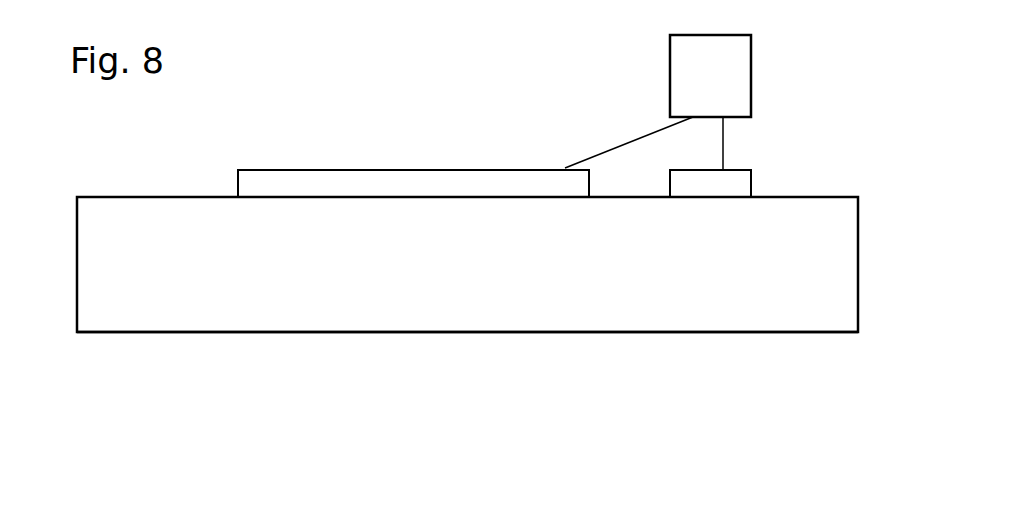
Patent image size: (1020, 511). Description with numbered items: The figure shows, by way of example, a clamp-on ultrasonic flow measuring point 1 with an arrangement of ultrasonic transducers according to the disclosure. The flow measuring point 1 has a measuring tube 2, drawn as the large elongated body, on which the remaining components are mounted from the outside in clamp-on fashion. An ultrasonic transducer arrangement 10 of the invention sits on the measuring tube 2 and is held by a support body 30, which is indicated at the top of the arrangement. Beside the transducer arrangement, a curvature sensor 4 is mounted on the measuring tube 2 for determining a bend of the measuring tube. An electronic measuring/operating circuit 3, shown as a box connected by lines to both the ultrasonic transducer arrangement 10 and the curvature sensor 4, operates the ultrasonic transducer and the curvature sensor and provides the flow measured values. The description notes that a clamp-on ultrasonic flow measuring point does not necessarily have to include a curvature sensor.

The flow measuring point 1 is at (427, 358).
The measuring tube 2 is at (155, 332).
The ultrasonic transducer arrangement 10 is at (318, 143).
The support body 30 is at (428, 168).
The electronic measuring/operating circuit 3 is at (658, 102).
The curvature sensor 4 is at (752, 170).